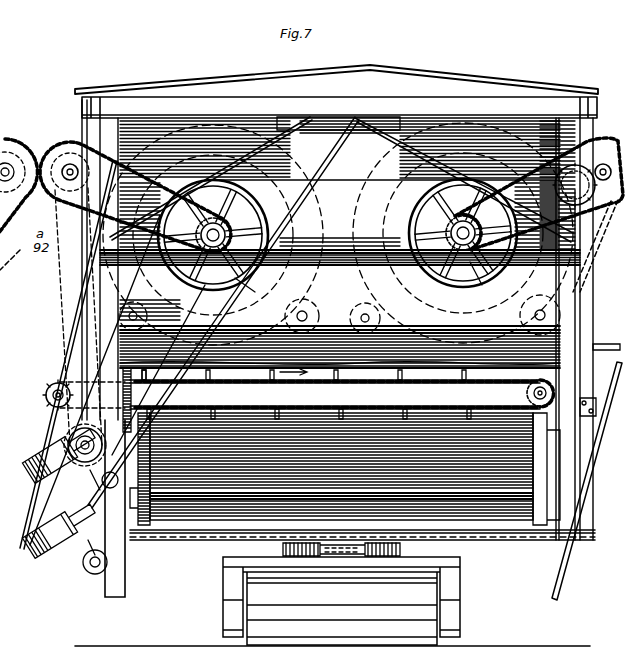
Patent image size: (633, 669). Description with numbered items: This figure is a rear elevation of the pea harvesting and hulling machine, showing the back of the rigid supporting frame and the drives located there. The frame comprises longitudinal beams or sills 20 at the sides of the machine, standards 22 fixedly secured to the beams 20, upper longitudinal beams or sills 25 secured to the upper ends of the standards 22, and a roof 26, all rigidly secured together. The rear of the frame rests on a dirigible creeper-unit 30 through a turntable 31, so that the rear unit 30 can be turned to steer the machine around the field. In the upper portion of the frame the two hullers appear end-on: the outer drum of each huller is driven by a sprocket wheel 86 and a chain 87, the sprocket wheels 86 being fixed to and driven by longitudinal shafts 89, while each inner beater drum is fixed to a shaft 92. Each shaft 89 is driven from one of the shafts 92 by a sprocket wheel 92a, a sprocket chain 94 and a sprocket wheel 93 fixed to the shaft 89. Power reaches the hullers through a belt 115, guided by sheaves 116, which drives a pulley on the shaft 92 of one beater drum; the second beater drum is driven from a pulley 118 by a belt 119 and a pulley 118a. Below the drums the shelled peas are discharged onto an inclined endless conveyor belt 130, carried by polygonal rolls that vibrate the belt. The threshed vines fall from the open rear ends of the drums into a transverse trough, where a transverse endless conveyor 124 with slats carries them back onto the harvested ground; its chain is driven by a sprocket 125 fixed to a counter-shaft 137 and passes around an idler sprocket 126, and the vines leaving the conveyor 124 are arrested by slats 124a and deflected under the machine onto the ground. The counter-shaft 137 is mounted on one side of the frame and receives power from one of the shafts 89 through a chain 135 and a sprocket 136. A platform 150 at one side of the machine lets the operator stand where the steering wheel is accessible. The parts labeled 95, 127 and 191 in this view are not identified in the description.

The longitudinal beams or sills 20 is at (0, 510).
The standards 22 is at (125, 570).
The upper longitudinal beams or sills 25 is at (597, 106).
The roof 26 is at (400, 74).
The dirigible creeper-unit 30 is at (341, 601).
The turntable 31 is at (280, 545).
The sprocket wheel 86 is at (40, 145).
The chain 87 is at (597, 236).
The longitudinal shafts 89 is at (596, 168).
The shaft 92 is at (225, 230).
The sprocket wheel 92a is at (200, 222).
The sprocket wheel 93 is at (600, 142).
The sprocket chain 94 is at (552, 225).
The chain 95 is at (131, 293).
The belt 115 is at (100, 318).
The sheaves 116 is at (40, 460).
The pulley 118 is at (222, 180).
The pulley 118a is at (472, 270).
The belt 119 is at (334, 170).
The transverse endless conveyor 124 is at (410, 420).
The slats 124a is at (583, 470).
The sprocket 125 is at (45, 400).
The idler sprocket 126 is at (540, 380).
The bearing bracket 127 is at (44, 355).
The inclined endless conveyor belt 130 is at (73, 150).
The chain 135 is at (77, 290).
The sprocket 136 is at (75, 382).
The counter-shaft 137 is at (46, 390).
The platform 150 is at (605, 344).
The flight 191 is at (140, 395).